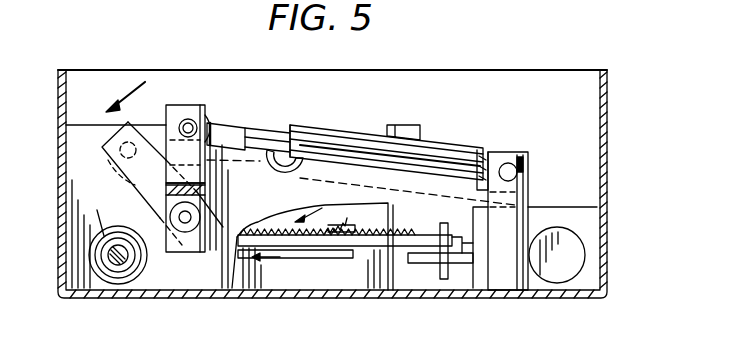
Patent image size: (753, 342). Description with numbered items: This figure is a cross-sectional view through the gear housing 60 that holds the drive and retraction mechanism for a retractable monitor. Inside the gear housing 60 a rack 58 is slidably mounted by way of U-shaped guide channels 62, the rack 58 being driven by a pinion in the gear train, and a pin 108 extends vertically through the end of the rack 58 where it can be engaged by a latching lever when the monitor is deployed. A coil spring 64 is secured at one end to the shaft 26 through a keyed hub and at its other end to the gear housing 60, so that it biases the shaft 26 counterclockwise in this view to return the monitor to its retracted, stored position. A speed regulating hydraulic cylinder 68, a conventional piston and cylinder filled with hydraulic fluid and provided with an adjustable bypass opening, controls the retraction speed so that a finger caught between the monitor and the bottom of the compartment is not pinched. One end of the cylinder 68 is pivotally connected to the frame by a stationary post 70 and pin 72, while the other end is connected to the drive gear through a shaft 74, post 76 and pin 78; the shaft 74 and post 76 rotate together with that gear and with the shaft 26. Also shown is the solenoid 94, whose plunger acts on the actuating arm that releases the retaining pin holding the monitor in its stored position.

The shaft 26 is at (118, 262).
The rack 58 is at (428, 233).
The gear housing 60 is at (607, 172).
The U-shaped guide channels 62 is at (325, 222).
The coil spring 64 is at (118, 226).
The speed regulating hydraulic cylinder 68 is at (440, 142).
The stationary post 70 is at (528, 193).
The pin 72 is at (512, 162).
The shaft 74 is at (186, 232).
The post 76 is at (162, 148).
The pin 78 is at (208, 124).
The solenoid 94 is at (577, 262).
The pin 108 is at (443, 270).